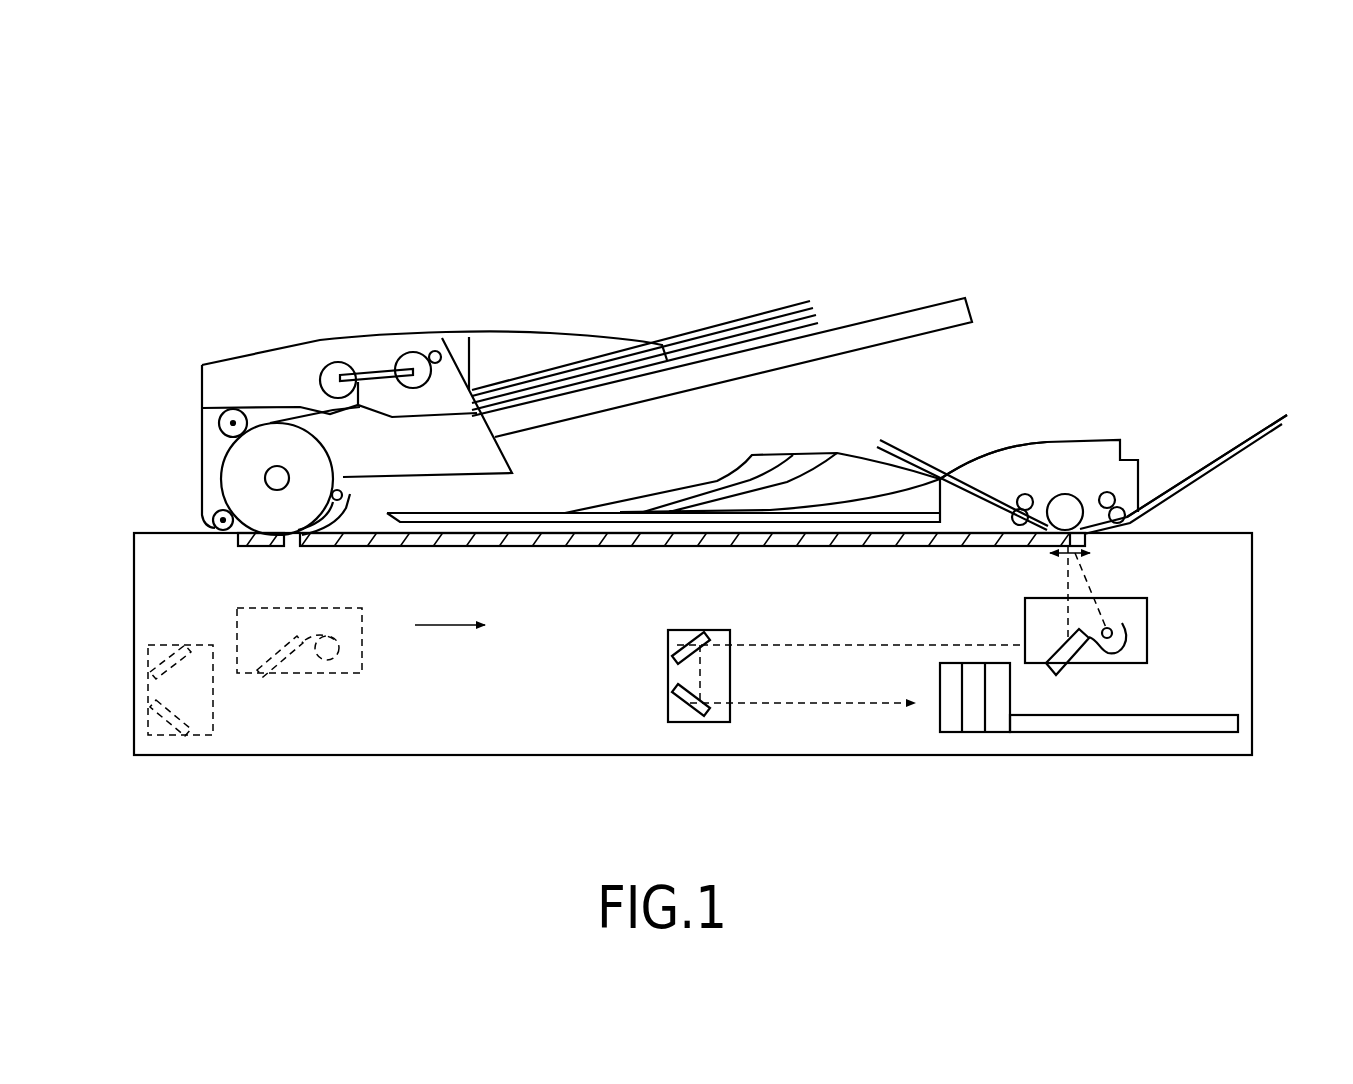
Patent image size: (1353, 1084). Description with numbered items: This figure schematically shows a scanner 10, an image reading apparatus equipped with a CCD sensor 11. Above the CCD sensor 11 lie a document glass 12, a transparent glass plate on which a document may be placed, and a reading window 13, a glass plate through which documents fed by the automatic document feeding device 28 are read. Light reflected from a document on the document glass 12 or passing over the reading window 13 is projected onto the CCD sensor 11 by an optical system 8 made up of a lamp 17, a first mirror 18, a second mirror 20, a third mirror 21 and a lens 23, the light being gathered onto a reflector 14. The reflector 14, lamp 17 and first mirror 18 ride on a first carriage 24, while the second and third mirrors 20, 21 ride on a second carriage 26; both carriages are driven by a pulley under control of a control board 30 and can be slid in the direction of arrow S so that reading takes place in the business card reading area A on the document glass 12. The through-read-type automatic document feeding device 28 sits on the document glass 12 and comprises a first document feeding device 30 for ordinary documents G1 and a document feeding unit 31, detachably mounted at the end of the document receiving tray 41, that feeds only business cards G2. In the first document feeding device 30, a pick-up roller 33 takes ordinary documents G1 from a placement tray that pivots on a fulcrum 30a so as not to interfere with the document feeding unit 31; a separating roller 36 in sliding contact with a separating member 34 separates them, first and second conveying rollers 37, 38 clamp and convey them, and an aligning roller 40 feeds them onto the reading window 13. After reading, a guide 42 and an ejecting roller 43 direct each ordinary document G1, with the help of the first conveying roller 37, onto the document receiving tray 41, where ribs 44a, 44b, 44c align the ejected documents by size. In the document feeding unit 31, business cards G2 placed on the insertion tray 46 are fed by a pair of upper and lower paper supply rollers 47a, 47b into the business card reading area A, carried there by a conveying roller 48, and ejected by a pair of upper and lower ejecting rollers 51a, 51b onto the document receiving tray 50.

The scanner 10 is at (680, 215).
The CCD sensor 11 is at (1252, 627).
The document glass 12 is at (452, 544).
The reading window 13 is at (258, 545).
The reflector 14 is at (1127, 642).
The lamp 17 is at (1113, 623).
The first mirror 18 is at (1077, 658).
The second mirror 20 is at (673, 650).
The third mirror 21 is at (667, 705).
The lens 23 is at (972, 733).
The first carriage 24 is at (1147, 605).
The second carriage 26 is at (685, 630).
The automatic document feeding device 28 is at (1047, 328).
The first document feeding device 30 is at (258, 370).
The fulcrum 30a is at (438, 352).
The document feeding unit 31 is at (1112, 440).
The pick-up roller 33 is at (410, 352).
The separating member 34 is at (325, 405).
The separating roller 36 is at (336, 362).
The first conveying roller 37 is at (222, 462).
The second conveying roller 38 is at (220, 420).
The aligning roller 40 is at (213, 513).
The document receiving tray 41 is at (545, 512).
The guide 42 is at (352, 505).
The ejecting roller 43 is at (344, 490).
The rib 44a is at (720, 477).
The rib 44b is at (763, 477).
The rib 44c is at (813, 465).
The insertion tray dedicated to business cards 46 is at (972, 497).
The upper paper supply roller 47a is at (1023, 493).
The lower paper supply roller 47b is at (1020, 517).
The conveying roller 48 is at (1065, 494).
The document receiving tray 50 is at (1200, 477).
The upper ejecting roller 51a is at (1125, 465).
The lower ejecting roller 51b is at (1117, 515).
The optical system 8 is at (998, 598).
The ordinary documents G1 is at (712, 335).
The business cards G2 is at (912, 462).
The arrow s S is at (458, 627).
The business card reading area A is at (1080, 568).